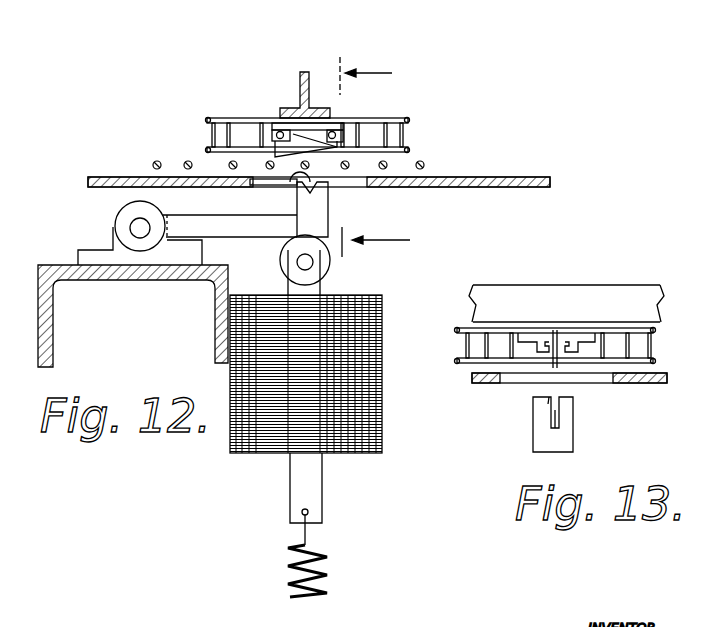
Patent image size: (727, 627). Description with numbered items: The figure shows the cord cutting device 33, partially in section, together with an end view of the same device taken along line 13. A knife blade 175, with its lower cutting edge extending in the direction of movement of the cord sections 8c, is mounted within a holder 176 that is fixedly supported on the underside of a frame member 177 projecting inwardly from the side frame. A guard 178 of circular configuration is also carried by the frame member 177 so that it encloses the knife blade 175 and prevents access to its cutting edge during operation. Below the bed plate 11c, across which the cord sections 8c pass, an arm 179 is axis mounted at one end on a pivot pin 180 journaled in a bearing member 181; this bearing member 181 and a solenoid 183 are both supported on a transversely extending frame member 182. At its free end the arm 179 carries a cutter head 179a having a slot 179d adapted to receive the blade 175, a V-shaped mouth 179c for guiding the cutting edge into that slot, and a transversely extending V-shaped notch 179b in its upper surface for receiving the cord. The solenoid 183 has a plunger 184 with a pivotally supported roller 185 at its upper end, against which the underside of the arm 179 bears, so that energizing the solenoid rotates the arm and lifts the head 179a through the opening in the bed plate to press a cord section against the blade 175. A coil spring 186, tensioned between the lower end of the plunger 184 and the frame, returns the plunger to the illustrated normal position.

In FIG. 12, the cord sections 8c is at (157, 160).
In FIG. 12, the bed plate 11c is at (527, 177).
In FIG. 12, the end view section line 13 is at (389, 152).
In FIG. 12, the cutting device 33 is at (278, 85).
In FIG. 12, the knife blade 175 is at (297, 134).
In FIG. 13, the knife blade 175 is at (563, 356).
In FIG. 12, the holder 176 is at (332, 122).
In FIG. 13, the holder 176 is at (538, 337).
In FIG. 12, the frame member 177 is at (322, 52).
In FIG. 13, the frame member 177 is at (647, 274).
In FIG. 12, the guard 178 is at (400, 116).
In FIG. 13, the guard 178 is at (653, 348).
In FIG. 12, the arm 179 is at (218, 222).
In FIG. 12, the cutter head 179a is at (328, 207).
In FIG. 13, the cutter head 179a is at (540, 452).
In FIG. 12, the V-shaped notch 179b is at (277, 195).
In FIG. 13, the V-shaped mouth 179c is at (550, 395).
In FIG. 13, the slot 179d is at (558, 420).
In FIG. 12, the pivot pin 180 is at (131, 231).
In FIG. 12, the bearing member 181 is at (121, 212).
In FIG. 12, the transversely extending frame member 182 is at (125, 275).
In FIG. 12, the solenoid 183 is at (382, 326).
In FIG. 12, the plunger 184 is at (320, 292).
In FIG. 12, the roller 185 is at (328, 262).
In FIG. 12, the coil spring 186 is at (327, 570).